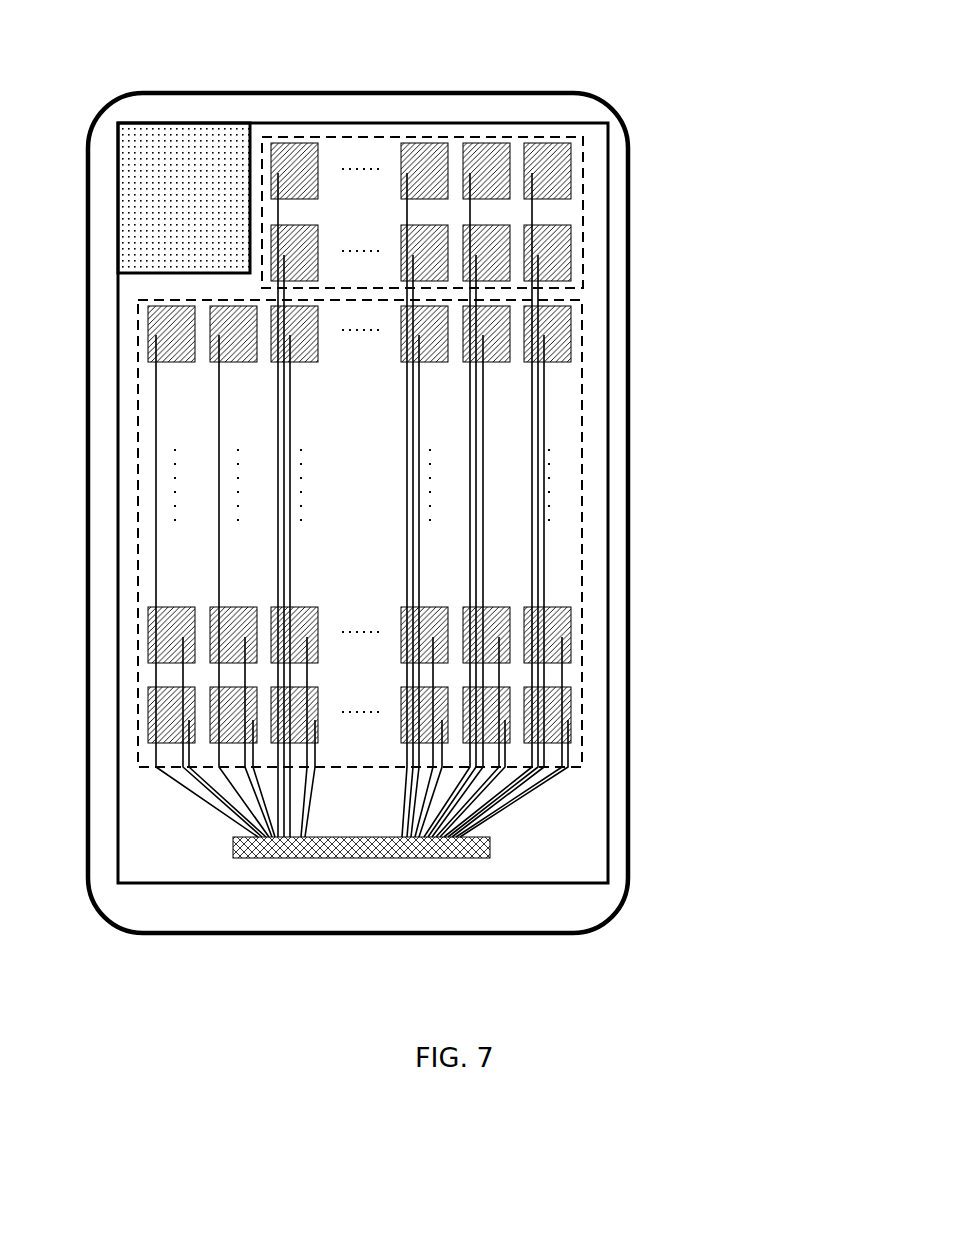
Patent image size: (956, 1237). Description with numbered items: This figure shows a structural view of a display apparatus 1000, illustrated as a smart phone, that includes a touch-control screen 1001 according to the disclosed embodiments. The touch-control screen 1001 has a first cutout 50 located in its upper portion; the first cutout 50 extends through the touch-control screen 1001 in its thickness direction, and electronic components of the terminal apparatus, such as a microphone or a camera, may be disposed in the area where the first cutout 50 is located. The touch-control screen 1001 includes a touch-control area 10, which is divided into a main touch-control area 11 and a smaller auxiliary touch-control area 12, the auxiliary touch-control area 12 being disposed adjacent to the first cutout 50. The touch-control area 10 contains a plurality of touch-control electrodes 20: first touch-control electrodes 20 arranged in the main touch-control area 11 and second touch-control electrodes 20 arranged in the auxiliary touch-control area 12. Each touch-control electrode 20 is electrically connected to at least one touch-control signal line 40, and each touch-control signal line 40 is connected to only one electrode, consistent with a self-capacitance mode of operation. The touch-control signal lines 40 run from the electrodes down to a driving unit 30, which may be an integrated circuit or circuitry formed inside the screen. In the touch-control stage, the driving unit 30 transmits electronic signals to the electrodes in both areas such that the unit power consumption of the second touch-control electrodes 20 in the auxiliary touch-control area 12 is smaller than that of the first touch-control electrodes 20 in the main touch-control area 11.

The display apparatus 1000 is at (598, 34).
The touch-control screen 1001 is at (452, 503).
The first cutout 50 is at (184, 158).
The touch-control area 10 is at (463, 452).
The auxiliary touch-control area 12 is at (482, 212).
The main touch-control area 11 is at (420, 533).
The touch-control electrodes 20 is at (416, 524).
The touch-control signal lines 40 is at (420, 505).
The driving unit 30 is at (395, 913).